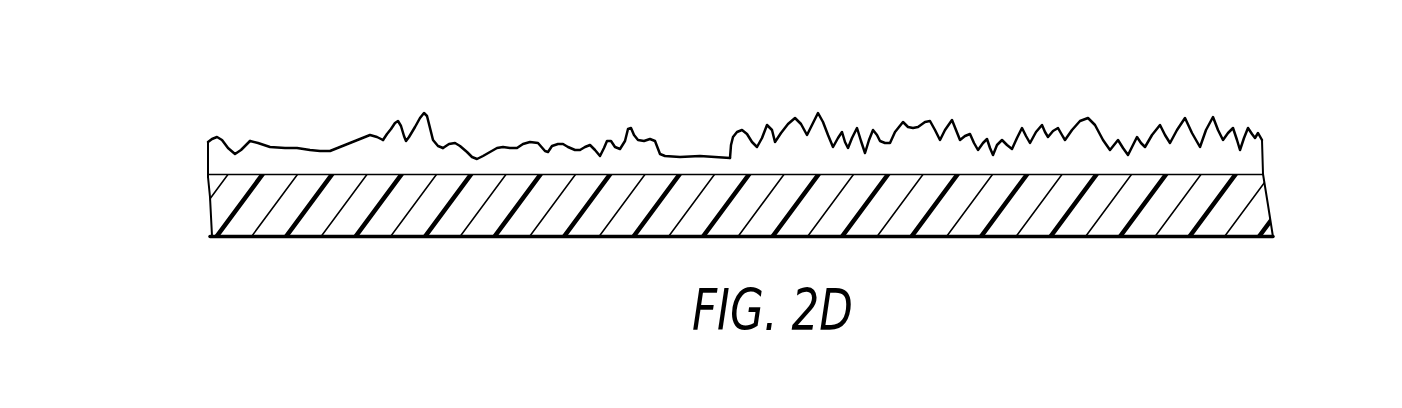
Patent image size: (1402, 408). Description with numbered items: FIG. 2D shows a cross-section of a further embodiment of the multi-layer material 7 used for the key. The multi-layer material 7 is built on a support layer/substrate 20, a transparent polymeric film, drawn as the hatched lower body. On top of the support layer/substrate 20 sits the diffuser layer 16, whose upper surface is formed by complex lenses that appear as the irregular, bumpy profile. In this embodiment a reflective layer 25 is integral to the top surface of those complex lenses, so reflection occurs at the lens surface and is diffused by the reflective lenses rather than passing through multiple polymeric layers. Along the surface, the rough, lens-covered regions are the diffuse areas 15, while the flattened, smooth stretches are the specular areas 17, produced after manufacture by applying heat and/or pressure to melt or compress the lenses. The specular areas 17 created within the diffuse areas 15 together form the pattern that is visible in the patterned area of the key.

The multi-layer material 7 is at (1307, 98).
The diffuse areas 15 is at (212, 138).
The diffuser layer 16 is at (220, 162).
The specular areas 17 is at (306, 141).
The support layer/substrate 20 is at (228, 200).
The reflective layer 25 is at (1262, 140).